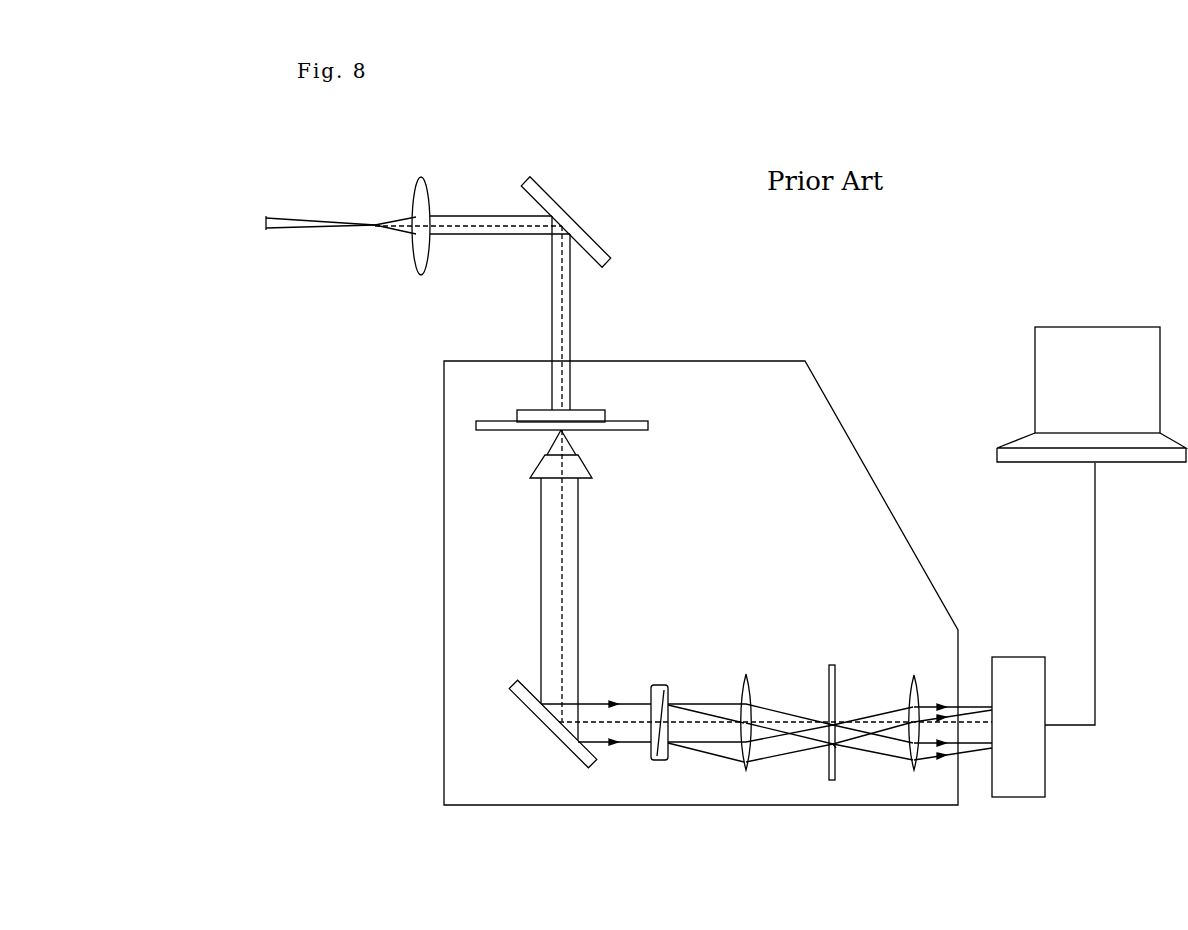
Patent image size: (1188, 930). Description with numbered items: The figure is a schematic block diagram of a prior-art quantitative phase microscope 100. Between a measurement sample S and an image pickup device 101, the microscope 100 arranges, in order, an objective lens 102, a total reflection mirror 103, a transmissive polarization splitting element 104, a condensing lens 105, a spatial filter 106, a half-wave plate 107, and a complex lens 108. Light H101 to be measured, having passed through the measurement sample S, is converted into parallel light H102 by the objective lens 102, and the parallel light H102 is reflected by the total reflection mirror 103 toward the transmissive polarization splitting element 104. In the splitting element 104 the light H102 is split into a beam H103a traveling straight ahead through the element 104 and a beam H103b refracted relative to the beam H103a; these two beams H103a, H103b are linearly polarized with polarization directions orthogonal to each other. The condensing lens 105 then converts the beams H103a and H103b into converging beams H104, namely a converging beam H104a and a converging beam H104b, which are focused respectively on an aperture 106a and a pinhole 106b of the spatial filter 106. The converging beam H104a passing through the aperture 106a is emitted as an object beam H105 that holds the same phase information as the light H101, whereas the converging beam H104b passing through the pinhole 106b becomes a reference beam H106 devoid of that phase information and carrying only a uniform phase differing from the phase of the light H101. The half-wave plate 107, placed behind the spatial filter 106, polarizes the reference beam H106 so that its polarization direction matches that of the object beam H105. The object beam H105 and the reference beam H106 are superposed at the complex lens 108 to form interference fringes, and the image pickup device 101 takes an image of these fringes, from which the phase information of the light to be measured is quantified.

The quantitative phase microscope 100 is at (828, 322).
The image pickup device 101 is at (1046, 762).
The objective lens 102 is at (592, 463).
The total reflection mirror 103 is at (548, 728).
The transmissive polarization splitting element 104 is at (652, 688).
The condensing lens 105 is at (742, 768).
The spatial filter 106 is at (827, 710).
The aperture 106a is at (848, 720).
The pinhole 106b is at (826, 750).
The half-wave plate 107 is at (838, 748).
The complex lens 108 is at (918, 772).
The measurement sample S is at (522, 408).
The light to be measured H101 is at (548, 443).
The parallel light H102 is at (541, 566).
The beam traveling straight ahead H103a is at (683, 700).
The refracted beam H103b is at (683, 748).
The converging beams H104 is at (749, 682).
The converging beam H104a is at (767, 700).
The converging beam H104b is at (786, 700).
The object beam H105 is at (893, 727).
The reference beam H106 is at (890, 770).